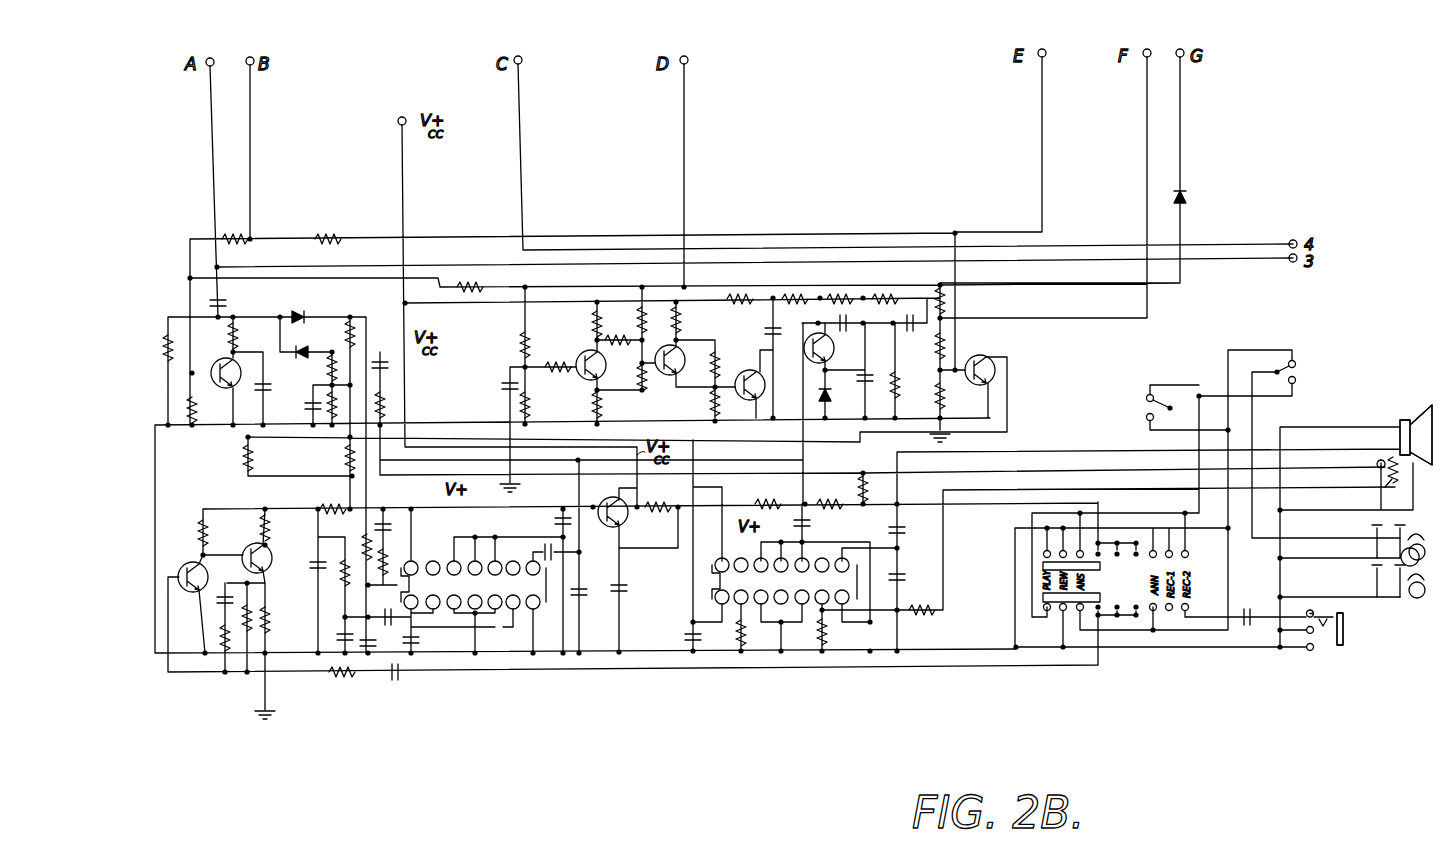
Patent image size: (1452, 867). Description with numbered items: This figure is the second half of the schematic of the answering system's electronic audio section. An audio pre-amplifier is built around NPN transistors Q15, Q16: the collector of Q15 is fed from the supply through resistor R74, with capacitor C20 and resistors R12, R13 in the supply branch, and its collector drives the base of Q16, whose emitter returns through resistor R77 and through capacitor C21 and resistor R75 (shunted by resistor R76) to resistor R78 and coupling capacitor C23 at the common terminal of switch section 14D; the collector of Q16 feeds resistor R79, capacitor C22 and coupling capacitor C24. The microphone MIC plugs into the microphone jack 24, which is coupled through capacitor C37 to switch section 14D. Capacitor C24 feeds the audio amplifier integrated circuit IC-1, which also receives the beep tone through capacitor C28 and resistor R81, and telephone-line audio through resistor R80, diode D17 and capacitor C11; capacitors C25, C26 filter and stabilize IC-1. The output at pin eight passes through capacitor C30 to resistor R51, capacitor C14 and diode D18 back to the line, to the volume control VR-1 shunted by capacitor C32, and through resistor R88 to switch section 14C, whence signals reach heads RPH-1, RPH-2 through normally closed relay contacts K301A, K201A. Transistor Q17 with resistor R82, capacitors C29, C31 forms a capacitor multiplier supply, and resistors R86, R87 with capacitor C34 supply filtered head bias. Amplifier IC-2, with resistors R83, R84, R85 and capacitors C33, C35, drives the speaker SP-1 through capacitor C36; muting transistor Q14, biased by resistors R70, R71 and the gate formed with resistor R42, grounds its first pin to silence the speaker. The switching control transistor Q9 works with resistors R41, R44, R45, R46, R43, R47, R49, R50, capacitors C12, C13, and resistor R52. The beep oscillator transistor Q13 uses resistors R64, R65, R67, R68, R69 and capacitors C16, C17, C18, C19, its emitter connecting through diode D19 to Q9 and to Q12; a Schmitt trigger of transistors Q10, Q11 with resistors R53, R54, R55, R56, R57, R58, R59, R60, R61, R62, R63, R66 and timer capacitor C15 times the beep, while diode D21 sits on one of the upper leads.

The resistor R41 is at (233, 231).
The resistor R42 is at (325, 230).
The diode D21 is at (1187, 197).
The resistor R43 is at (162, 352).
The NPN transistor Q9 is at (216, 349).
The coupling capacitor C11 is at (226, 303).
The resistor R45 is at (238, 333).
The diode D17 is at (298, 310).
The diode D18 is at (305, 343).
The resistor R47 is at (345, 324).
The capacitor C12 is at (270, 386).
The capacitor C13 is at (306, 410).
The resistor R49 is at (338, 408).
The resistor R44 is at (198, 411).
The capacitor C14 is at (391, 371).
The resistor R51 is at (386, 406).
The resistor R46 is at (242, 459).
The resistor R50 is at (344, 462).
The resistor R74 is at (334, 503).
The resistor R12 is at (208, 530).
The resistor R13 is at (270, 527).
The NPN transistor Q16 is at (274, 555).
The NPN transistor Q15 is at (189, 586).
The capacitor C21 is at (227, 581).
The capacitor C20 is at (310, 565).
The resistor R79 is at (340, 577).
The resistor R77 is at (270, 622).
The resistor R76 is at (252, 624).
The resistor R75 is at (220, 642).
The capacitor C22 is at (340, 640).
The resistor R78 is at (342, 678).
The coupling capacitor C23 is at (400, 676).
The capacitor C25 is at (380, 644).
The capacitor C26 is at (417, 642).
The coupling capacitor C24 is at (381, 608).
The resistor R80 is at (362, 540).
The coupling capacitor C28 is at (383, 520).
The resistor R81 is at (388, 558).
The integrated circuit IC-1 is at (473, 585).
The capacitor C29 is at (555, 521).
The coupling capacitor C30 is at (543, 548).
The NPN transistor Q17 is at (620, 527).
The resistor R82 is at (655, 517).
The capacitor C32 is at (587, 592).
The capacitor C31 is at (627, 588).
The capacitor C33 is at (685, 637).
The integrated circuit IC-2 is at (784, 581).
The resistor R86 is at (765, 494).
The resistor R87 is at (826, 494).
The resistor R88 is at (876, 489).
The capacitor C34 is at (810, 522).
The coupling capacitor C36 is at (905, 528).
The capacitor C35 is at (905, 576).
The resistor R83 is at (922, 616).
The resistor R85 is at (828, 630).
The resistor R84 is at (747, 632).
The resistor R52 is at (462, 310).
The resistor R53 is at (519, 346).
The resistor R55 is at (541, 405).
The capacitor C15 is at (502, 392).
The resistor R54 is at (554, 369).
The transistor Q10 is at (591, 365).
The resistor R56 is at (591, 326).
The resistor R59 is at (636, 320).
The resistor R57 is at (621, 349).
The resistor R60 is at (636, 382).
The resistor R58 is at (613, 405).
The transistor Q11 is at (682, 371).
The resistor R61 is at (690, 320).
The resistor R62 is at (733, 363).
The resistor R63 is at (709, 406).
The NPN transistor Q12 is at (741, 391).
The resistor R64 is at (737, 309).
The resistor R65 is at (791, 309).
The resistor R67 is at (850, 283).
The resistor R68 is at (884, 309).
The capacitor C16 is at (765, 336).
The capacitor C17 is at (846, 316).
The capacitor C18 is at (910, 331).
The NPN transistor Q13 is at (833, 354).
The capacitor C19 is at (857, 380).
The diode D19 is at (838, 401).
The resistor R69 is at (909, 392).
The resistor R66 is at (946, 300).
The resistor R70 is at (946, 344).
The resistor R71 is at (946, 392).
The transistor Q14 is at (1004, 370).
The relay contacts K201A is at (1126, 408).
The relay contacts K301A is at (1314, 373).
The speaker SP-1 is at (1413, 412).
The volume control potentiometer VR-1 is at (1413, 477).
The record/reproduce head RPH-1 is at (1397, 539).
The record/reproduce head RPH-2 is at (1399, 597).
The microphone MIC is at (1352, 629).
The microphone jack 24 is at (1341, 645).
The capacitor C37 is at (1252, 623).
The switch section 14C is at (1088, 568).
The switch section 14D is at (1089, 597).